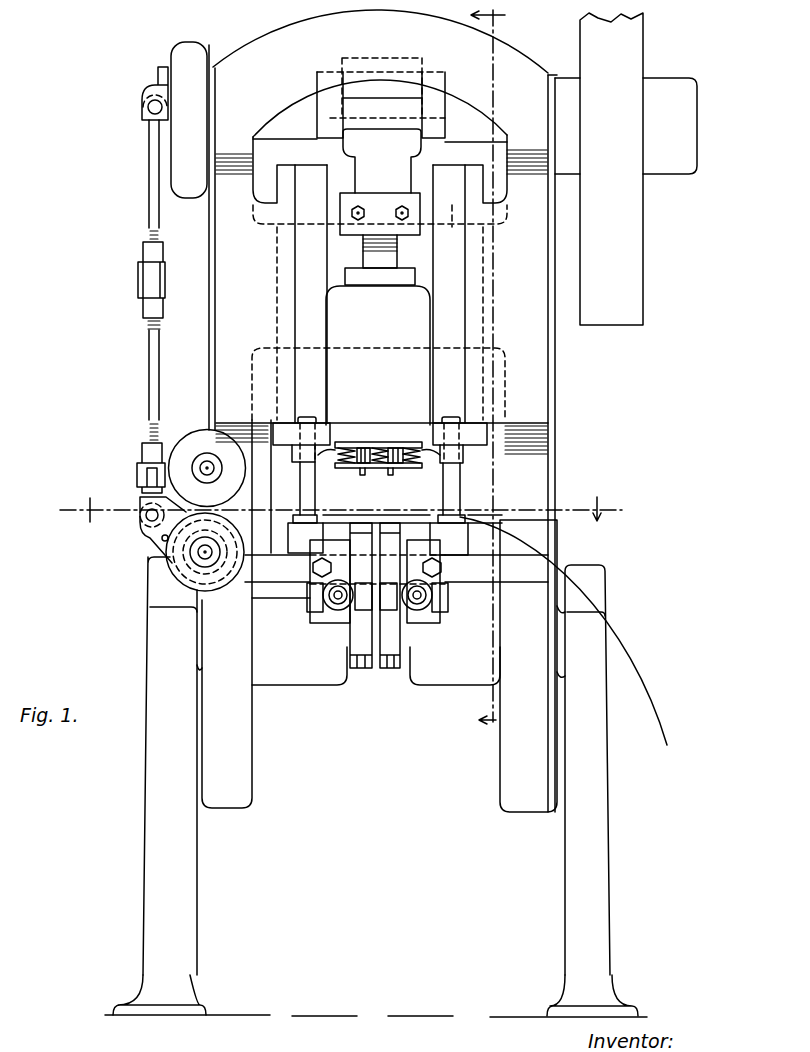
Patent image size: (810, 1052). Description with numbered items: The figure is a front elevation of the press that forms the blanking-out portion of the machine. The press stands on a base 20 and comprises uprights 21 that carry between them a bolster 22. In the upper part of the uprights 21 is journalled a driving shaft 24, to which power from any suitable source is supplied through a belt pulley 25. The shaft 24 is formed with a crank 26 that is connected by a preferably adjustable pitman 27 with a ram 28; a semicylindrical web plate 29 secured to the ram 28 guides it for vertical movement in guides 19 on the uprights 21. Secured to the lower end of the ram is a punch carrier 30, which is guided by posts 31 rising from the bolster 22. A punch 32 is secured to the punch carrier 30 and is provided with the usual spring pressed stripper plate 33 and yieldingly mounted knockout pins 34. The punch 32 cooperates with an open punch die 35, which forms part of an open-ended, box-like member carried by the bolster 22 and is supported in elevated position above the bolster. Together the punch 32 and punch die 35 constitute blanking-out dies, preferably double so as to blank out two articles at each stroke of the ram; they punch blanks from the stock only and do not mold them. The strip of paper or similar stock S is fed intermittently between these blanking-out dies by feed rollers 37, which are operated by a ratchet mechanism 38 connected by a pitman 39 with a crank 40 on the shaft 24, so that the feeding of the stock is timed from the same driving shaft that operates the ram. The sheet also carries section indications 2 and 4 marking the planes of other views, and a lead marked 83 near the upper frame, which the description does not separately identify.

The section line 2- 2 is at (496, 379).
The section line 4- 4 is at (339, 510).
The guides 19 is at (283, 300).
The base 20 is at (146, 882).
The uprights 21 is at (208, 357).
The bolster 22 is at (540, 567).
The driving shaft 24 is at (480, 110).
The belt pulley 25 is at (637, 278).
The crank 26 is at (408, 90).
The pitman 27 is at (363, 172).
The ram 28 is at (417, 297).
The semicylindrical web plate 29 is at (460, 256).
The punch carrier 30 is at (287, 423).
The posts 31 is at (300, 487).
The punch 32 is at (363, 460).
The spring pressed stripper plate 33 is at (412, 469).
The knockout pins 34 is at (391, 476).
The open punch die 35 is at (412, 515).
The feed rollers 37 is at (188, 441).
The ratchet mechanism 38 is at (183, 555).
The pitman 39 is at (150, 375).
The crank 40 is at (160, 68).
The hidden part 83 is at (449, 206).
The strip of stock S is at (643, 670).